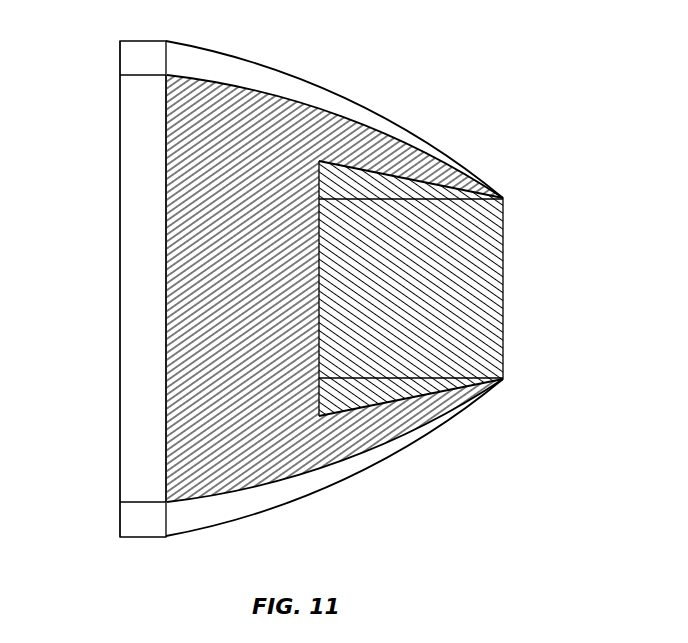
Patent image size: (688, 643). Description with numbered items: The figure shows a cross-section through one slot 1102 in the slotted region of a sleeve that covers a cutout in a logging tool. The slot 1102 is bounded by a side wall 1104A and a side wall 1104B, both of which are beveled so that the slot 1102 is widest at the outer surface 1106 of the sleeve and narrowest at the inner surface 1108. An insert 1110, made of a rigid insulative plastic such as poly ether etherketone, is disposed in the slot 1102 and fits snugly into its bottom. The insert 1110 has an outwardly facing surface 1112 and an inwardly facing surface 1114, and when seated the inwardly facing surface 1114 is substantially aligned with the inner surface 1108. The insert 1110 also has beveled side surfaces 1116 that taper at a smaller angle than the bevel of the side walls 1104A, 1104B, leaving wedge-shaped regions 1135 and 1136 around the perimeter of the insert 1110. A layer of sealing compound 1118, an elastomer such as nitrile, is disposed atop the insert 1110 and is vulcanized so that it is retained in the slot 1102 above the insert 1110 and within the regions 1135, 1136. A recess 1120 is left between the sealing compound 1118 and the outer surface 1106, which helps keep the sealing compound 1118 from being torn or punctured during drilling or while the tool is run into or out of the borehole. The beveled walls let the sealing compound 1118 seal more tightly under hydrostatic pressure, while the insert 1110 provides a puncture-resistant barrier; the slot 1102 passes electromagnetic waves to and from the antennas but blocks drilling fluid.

The slot 1102 is at (323, 116).
The side wall 1104A is at (238, 83).
The side wall 1104B is at (432, 417).
The outer surface 1106 is at (133, 228).
The inner surface 1108 is at (493, 277).
The insert 1110 is at (340, 212).
The outwardly facing surface 1112 is at (318, 232).
The inwardly facing surface 1114 is at (505, 335).
The beveled side surfaces 1116 is at (350, 383).
The sealing compound 1118 is at (181, 140).
The recess 1120 is at (120, 177).
The region 1135 is at (413, 180).
The region 1136 is at (306, 447).